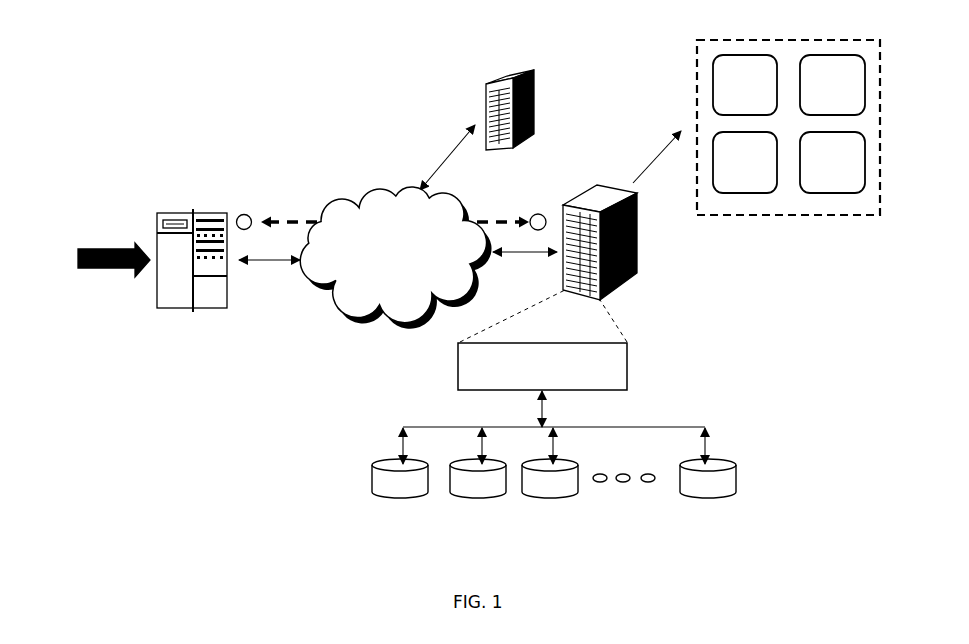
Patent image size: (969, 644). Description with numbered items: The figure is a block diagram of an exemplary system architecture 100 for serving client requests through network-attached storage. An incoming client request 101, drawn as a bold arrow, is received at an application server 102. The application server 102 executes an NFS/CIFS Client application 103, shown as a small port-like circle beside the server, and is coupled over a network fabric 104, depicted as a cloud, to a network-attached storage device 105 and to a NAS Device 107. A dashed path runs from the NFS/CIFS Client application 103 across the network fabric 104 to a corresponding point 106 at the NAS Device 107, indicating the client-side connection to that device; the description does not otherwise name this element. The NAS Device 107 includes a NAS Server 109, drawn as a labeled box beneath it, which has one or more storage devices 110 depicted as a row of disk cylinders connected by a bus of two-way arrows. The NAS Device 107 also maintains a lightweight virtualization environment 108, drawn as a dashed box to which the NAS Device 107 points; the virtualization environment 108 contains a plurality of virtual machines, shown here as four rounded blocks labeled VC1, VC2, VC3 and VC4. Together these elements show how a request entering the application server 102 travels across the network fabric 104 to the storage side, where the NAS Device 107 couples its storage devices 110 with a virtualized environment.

The system architecture 100 is at (269, 60).
The incoming client request 101 is at (88, 270).
The application server 102 is at (165, 212).
The NFS/CIFS Client application 103 is at (244, 214).
The network fabric 104 is at (347, 200).
The network-attached storage device 105 is at (483, 90).
The network port of NAS server 106 is at (538, 213).
The NAS Device 107 is at (637, 258).
The virtualization environment 108 is at (830, 220).
The NAS Server 109 is at (455, 366).
The storage devices 110 is at (740, 481).